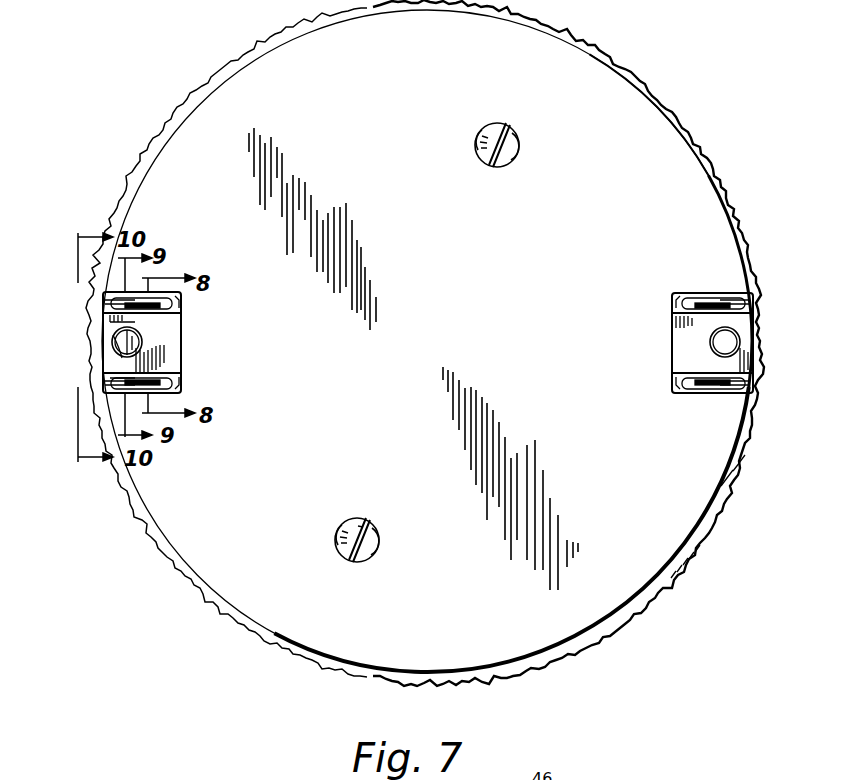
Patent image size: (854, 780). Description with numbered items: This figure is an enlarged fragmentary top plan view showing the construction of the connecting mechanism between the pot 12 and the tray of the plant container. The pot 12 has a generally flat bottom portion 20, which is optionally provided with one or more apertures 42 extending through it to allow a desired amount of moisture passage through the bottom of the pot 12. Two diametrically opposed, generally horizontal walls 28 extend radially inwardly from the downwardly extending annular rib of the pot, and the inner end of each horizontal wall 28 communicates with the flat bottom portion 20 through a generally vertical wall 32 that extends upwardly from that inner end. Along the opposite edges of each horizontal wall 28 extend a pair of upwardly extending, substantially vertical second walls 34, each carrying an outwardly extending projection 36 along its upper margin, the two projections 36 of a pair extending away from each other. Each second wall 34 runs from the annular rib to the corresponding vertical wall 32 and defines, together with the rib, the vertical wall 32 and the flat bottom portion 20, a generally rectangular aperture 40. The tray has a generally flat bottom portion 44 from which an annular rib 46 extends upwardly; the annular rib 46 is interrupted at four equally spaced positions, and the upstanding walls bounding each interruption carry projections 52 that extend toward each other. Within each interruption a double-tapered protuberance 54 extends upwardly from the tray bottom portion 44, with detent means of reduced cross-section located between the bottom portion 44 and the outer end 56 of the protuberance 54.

The pot 12 is at (190, 127).
The generally flat bottom portion 20 is at (222, 87).
The horizontal walls 28 is at (172, 350).
The vertical wall 32 is at (182, 335).
The second walls 34 is at (172, 316).
The outwardly extending projection 36 is at (178, 300).
The aperture 40 is at (239, 385).
The apertures 42 is at (490, 152).
The bottom portion of the tray 44 is at (357, 528).
The annular rib 46 is at (108, 300).
The projection 52 is at (110, 322).
The double-tapered protuberance 54 is at (118, 343).
The outer end of the protuberance 56 is at (108, 348).